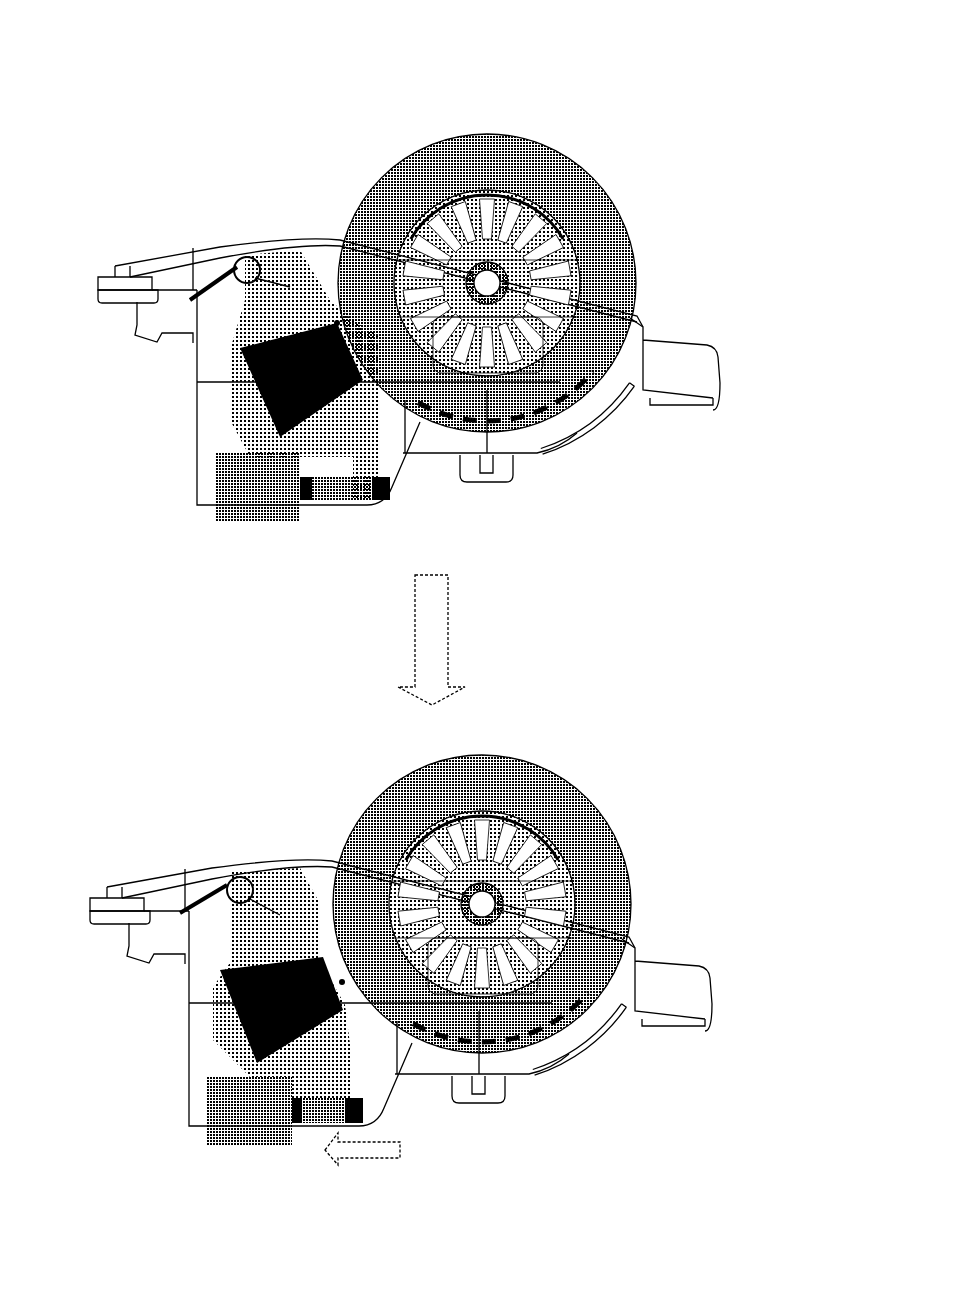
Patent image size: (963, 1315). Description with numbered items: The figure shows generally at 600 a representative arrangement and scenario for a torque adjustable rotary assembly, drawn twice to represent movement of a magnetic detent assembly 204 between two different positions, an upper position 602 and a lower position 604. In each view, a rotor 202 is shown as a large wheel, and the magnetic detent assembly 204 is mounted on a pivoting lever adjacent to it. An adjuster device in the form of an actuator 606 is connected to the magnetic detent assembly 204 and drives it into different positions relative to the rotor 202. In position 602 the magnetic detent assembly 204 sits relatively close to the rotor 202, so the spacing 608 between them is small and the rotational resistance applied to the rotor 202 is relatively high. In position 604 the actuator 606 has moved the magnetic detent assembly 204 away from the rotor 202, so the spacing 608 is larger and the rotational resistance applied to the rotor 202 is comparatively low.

The representative arrangement and scenario 600 is at (138, 70).
The rotor 202 is at (512, 173).
The magnetic detent assembly 204 is at (240, 358).
The position 602 is at (200, 220).
The position 604 is at (207, 740).
The actuator 606 is at (150, 1150).
The spacing 608 is at (337, 322).